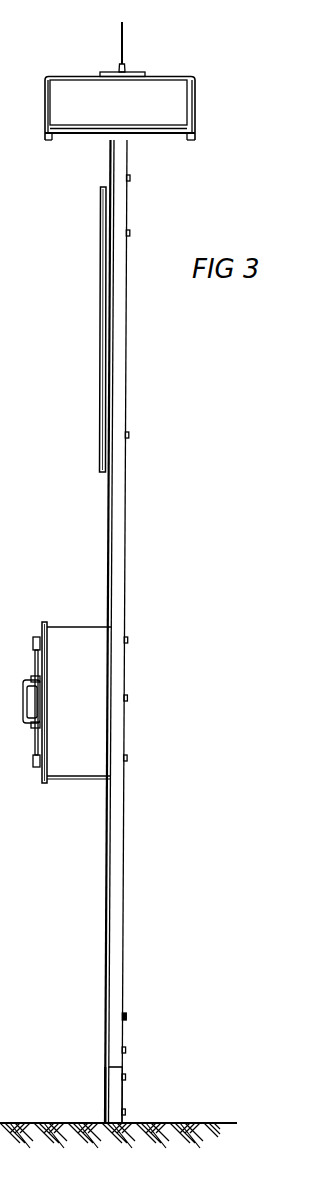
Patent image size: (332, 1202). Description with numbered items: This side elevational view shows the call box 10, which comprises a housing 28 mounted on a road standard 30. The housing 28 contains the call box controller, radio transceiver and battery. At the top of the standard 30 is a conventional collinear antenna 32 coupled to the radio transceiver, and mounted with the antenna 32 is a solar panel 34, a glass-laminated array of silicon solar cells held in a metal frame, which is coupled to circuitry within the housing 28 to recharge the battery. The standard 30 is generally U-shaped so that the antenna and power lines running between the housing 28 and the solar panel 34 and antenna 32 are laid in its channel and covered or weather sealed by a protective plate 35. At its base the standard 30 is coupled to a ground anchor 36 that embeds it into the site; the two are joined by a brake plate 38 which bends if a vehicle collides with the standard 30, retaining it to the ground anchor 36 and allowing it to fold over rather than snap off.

The call box 10 is at (186, 396).
The housing 28 is at (77, 637).
The road standard 30 is at (122, 800).
The collinear antenna 32 is at (123, 44).
The solar panel 34 is at (178, 106).
The protective plate 35 is at (123, 475).
The ground anchor 36 is at (116, 1097).
The brake plate 38 is at (126, 1017).